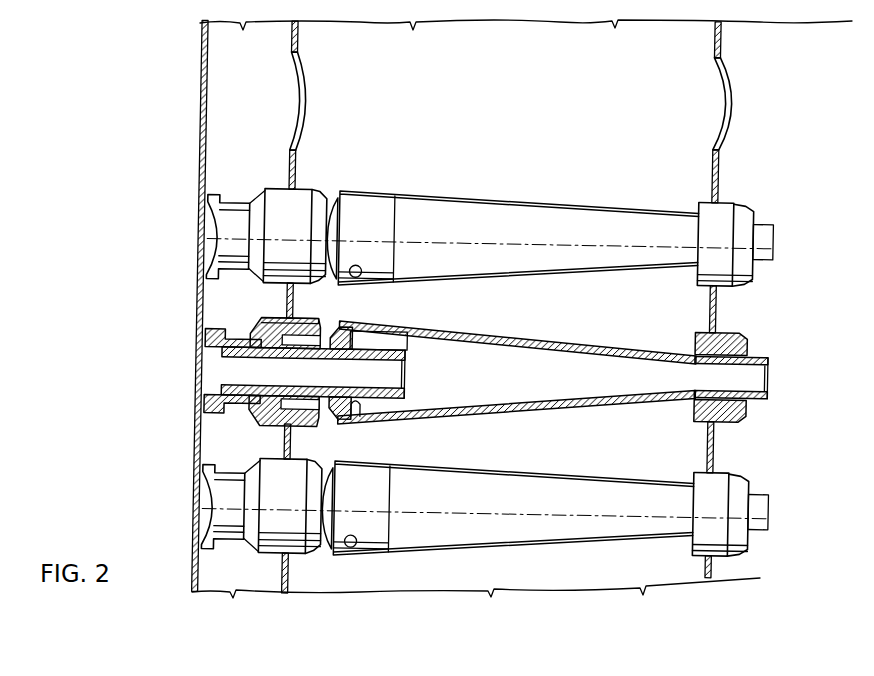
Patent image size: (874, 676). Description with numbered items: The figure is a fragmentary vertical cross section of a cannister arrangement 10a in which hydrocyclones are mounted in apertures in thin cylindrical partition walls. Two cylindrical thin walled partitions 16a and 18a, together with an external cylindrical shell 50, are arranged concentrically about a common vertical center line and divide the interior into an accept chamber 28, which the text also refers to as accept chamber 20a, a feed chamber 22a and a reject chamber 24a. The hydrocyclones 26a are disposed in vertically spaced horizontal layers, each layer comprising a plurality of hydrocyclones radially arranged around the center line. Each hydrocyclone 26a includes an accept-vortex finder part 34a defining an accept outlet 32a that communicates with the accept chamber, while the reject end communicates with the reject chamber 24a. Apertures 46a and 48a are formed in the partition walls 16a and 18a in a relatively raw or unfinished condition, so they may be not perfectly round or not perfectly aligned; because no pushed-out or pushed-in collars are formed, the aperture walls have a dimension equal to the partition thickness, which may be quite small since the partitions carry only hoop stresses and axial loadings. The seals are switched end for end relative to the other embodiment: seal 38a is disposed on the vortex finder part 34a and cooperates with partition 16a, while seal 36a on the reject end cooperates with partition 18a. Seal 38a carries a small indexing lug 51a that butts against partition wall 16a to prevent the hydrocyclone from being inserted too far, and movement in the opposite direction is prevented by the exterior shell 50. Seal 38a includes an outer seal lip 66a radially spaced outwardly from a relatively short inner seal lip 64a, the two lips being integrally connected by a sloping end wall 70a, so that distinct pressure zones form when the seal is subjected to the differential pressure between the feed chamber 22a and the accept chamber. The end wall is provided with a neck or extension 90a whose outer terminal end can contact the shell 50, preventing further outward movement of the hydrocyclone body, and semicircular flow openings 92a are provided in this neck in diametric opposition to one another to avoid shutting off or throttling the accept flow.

The coupling assembly 10a is at (190, 117).
The external cylindrical shell 50 is at (202, 150).
The accept chamber 20a is at (263, 63).
The feed chamber 22a is at (513, 87).
The reject chamber 24a is at (818, 93).
The aperture 46a is at (306, 77).
The cylindrical thin walled partition 16a is at (300, 156).
The aperture 48a is at (718, 140).
The cylindrical thin walled partition 18a is at (716, 166).
The semi circular flow openings 92a is at (233, 203).
The seal 38a is at (302, 190).
The accept-vortex finder part 34a is at (368, 340).
The seal 36a is at (728, 205).
The accept outlet 32a is at (228, 378).
The neck or extension 90a is at (250, 336).
The indexing lug 51a is at (280, 318).
The sloping end wall 70a is at (252, 410).
The inner seal lip 64a is at (330, 342).
The outer seal lip 66a is at (290, 420).
The hydrocyclone 26a is at (546, 338).
The accept chamber 28 is at (770, 377).